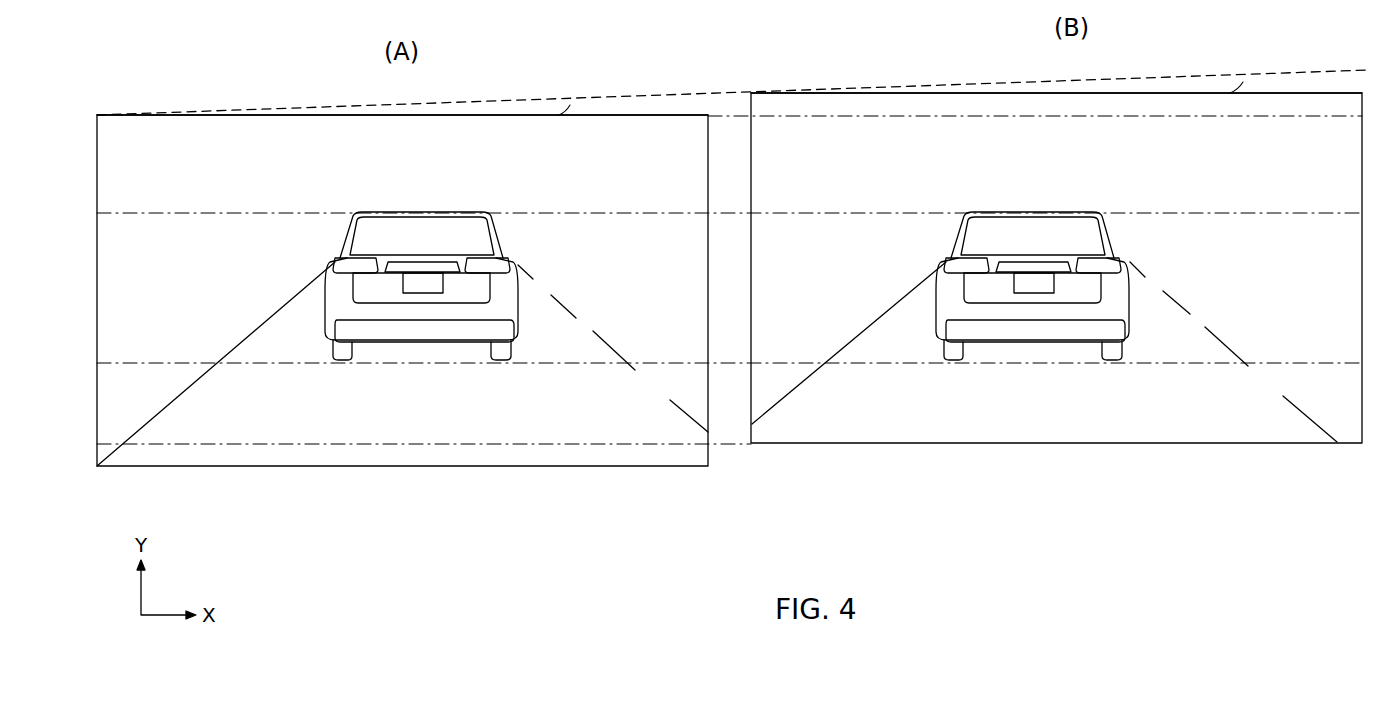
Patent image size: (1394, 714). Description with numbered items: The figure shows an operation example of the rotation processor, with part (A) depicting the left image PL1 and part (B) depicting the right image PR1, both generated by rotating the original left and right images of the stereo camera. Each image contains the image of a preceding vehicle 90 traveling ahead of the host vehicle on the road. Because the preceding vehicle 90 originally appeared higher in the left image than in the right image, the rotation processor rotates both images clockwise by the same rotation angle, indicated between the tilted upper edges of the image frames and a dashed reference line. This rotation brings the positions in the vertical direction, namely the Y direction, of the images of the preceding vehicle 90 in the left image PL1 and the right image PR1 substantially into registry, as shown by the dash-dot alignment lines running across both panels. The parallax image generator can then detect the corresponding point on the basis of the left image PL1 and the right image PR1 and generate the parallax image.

The preceding vehicle 90 is at (426, 309).
The left image PL1 is at (618, 114).
The right image PR1 is at (1290, 93).